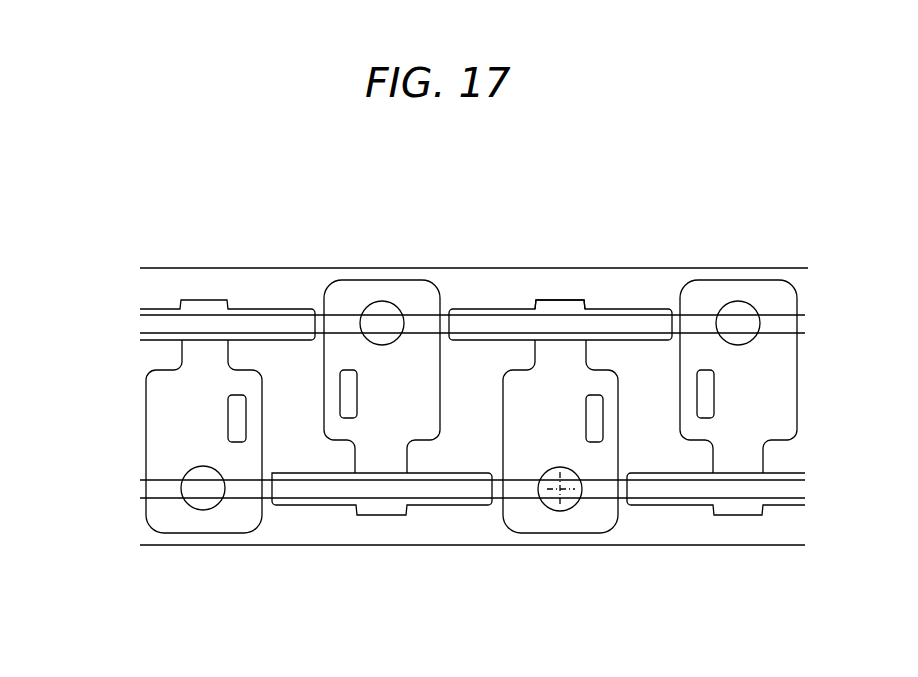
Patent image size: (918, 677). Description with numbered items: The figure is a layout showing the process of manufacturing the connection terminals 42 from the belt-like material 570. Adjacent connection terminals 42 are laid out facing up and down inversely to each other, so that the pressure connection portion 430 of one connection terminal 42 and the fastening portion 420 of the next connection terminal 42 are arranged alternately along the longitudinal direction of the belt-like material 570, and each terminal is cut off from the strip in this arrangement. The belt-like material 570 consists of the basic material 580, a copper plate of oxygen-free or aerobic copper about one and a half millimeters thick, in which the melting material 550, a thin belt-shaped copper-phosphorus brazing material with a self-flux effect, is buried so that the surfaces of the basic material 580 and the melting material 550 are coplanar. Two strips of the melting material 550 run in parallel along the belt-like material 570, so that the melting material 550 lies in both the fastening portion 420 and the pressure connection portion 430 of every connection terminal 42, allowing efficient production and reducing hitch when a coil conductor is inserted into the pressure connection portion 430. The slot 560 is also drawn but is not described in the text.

The connection terminal 42 is at (562, 305).
The fastening portion 420 is at (566, 520).
The pressure connection portion 430 is at (473, 500).
The melting material 550 is at (500, 318).
The slot 560 is at (238, 408).
The belt-like material 570 is at (161, 345).
The basic material 580 is at (270, 287).